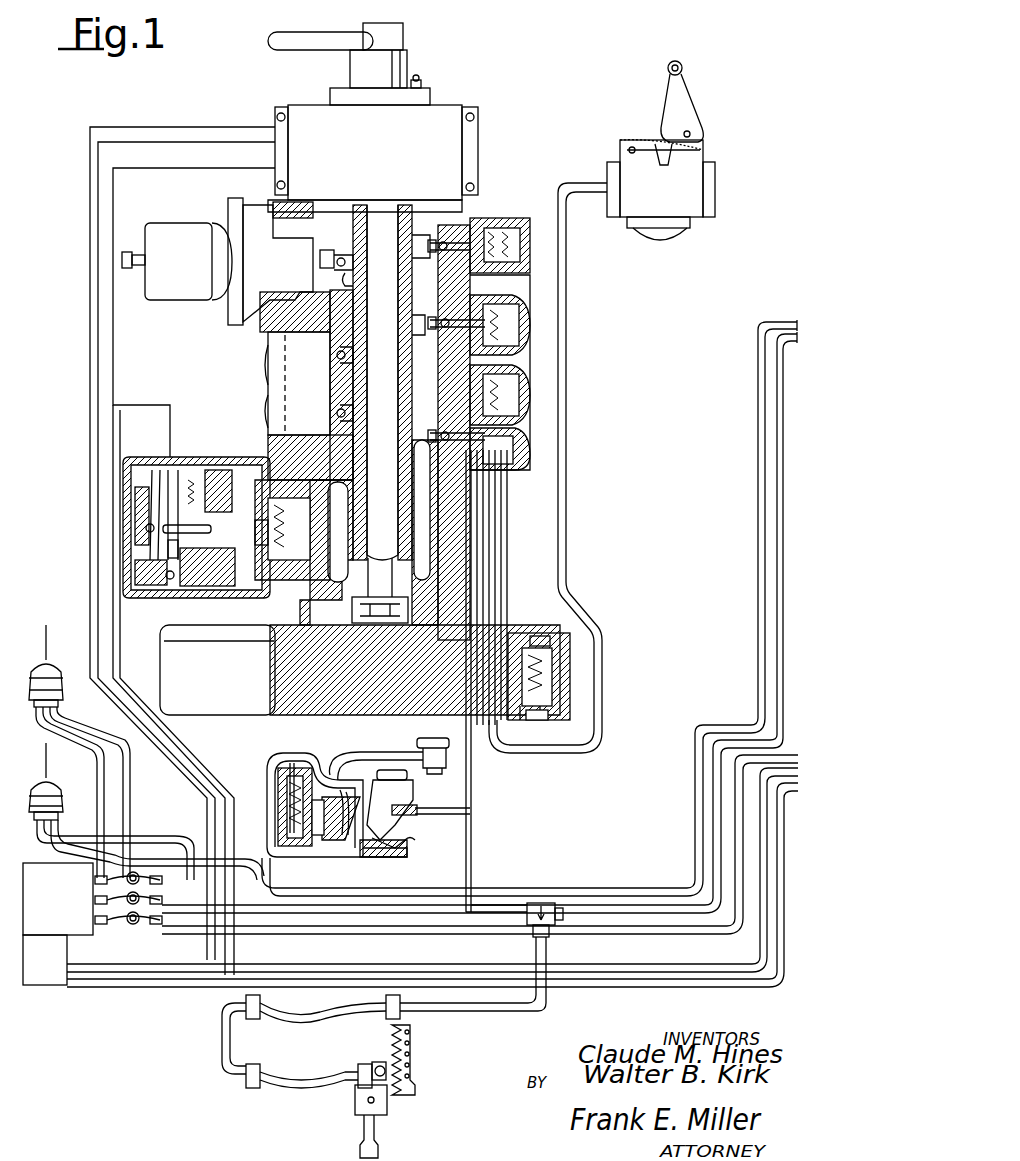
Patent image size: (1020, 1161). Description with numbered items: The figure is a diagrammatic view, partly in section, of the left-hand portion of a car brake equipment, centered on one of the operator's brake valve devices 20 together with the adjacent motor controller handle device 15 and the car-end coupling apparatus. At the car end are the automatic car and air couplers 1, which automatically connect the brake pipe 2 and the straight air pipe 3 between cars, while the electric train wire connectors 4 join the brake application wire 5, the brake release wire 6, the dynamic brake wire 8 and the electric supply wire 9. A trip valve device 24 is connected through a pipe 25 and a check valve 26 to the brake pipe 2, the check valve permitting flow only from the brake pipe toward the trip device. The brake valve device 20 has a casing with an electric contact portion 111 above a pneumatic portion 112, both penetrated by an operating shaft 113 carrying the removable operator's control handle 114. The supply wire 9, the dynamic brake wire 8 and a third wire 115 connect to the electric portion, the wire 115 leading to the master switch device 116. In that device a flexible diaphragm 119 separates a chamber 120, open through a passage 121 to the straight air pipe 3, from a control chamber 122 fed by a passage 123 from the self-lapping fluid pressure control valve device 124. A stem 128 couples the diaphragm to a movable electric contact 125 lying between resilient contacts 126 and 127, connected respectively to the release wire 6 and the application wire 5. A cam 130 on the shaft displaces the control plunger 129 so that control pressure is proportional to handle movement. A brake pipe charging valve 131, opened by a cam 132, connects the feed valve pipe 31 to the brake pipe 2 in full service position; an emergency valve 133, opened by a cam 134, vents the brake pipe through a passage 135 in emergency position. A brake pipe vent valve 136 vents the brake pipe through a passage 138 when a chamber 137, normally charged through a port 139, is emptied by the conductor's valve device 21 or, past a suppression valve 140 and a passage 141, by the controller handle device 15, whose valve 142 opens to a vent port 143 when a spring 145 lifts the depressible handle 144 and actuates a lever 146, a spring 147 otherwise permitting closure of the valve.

The automatic car and air couplers 1 is at (36, 864).
The brake pipe 2 is at (594, 926).
The straight air pipe 3 is at (604, 898).
The electric train wire connectors 4 is at (47, 985).
The brake application wire 5 is at (638, 964).
The brake release wire 6 is at (715, 979).
The dynamic brake wire 8 is at (605, 978).
The electric supply wire 9 is at (728, 980).
The motor controller handle device 15 is at (323, 862).
The operator's brake valve device 20 is at (437, 85).
The conductor's valve device 21 is at (607, 154).
The automatic closing trip valve device 24 is at (390, 1110).
The pipe 25 is at (498, 1010).
The check valve 26 is at (527, 935).
The feed valve pipe 31 is at (695, 797).
The electric contact portion 111 is at (480, 102).
The pneumatic portion 112 is at (520, 521).
The operating shaft 113 is at (375, 222).
The operator's control handle 114 is at (283, 40).
The third wire 115 is at (113, 328).
The master switch device 116 is at (112, 504).
The flexible diaphragm 119 is at (262, 585).
The chamber 120 is at (300, 578).
The passage 121 is at (270, 665).
The control chamber 122 is at (264, 462).
The passage 123 is at (285, 428).
The self-lapping fluid pressure control valve device 124 is at (209, 334).
The movable electric contact 125 is at (166, 513).
The resilient contact 126 is at (150, 480).
The resilient contact 127 is at (200, 464).
The stem 128 is at (210, 585).
The control plunger 129 is at (323, 250).
The cam 130 is at (352, 282).
The brake pipe charging or emergency application release valve 131 is at (497, 306).
The cam 132 is at (410, 352).
The emergency valve 133 is at (497, 222).
The cam 134 is at (398, 262).
The passage 135 is at (468, 226).
The brake pipe vent valve 136 is at (572, 695).
The chamber 137 is at (548, 636).
The passage 138 is at (544, 722).
The port 139 is at (522, 722).
The suppression valve 140 is at (520, 432).
The passage 141 is at (500, 482).
The valve 142 is at (413, 824).
The vent port 143 is at (411, 845).
The depressible handle 144 is at (420, 755).
The spring 145 is at (268, 785).
The lever 146 is at (305, 850).
The spring 147 is at (413, 795).